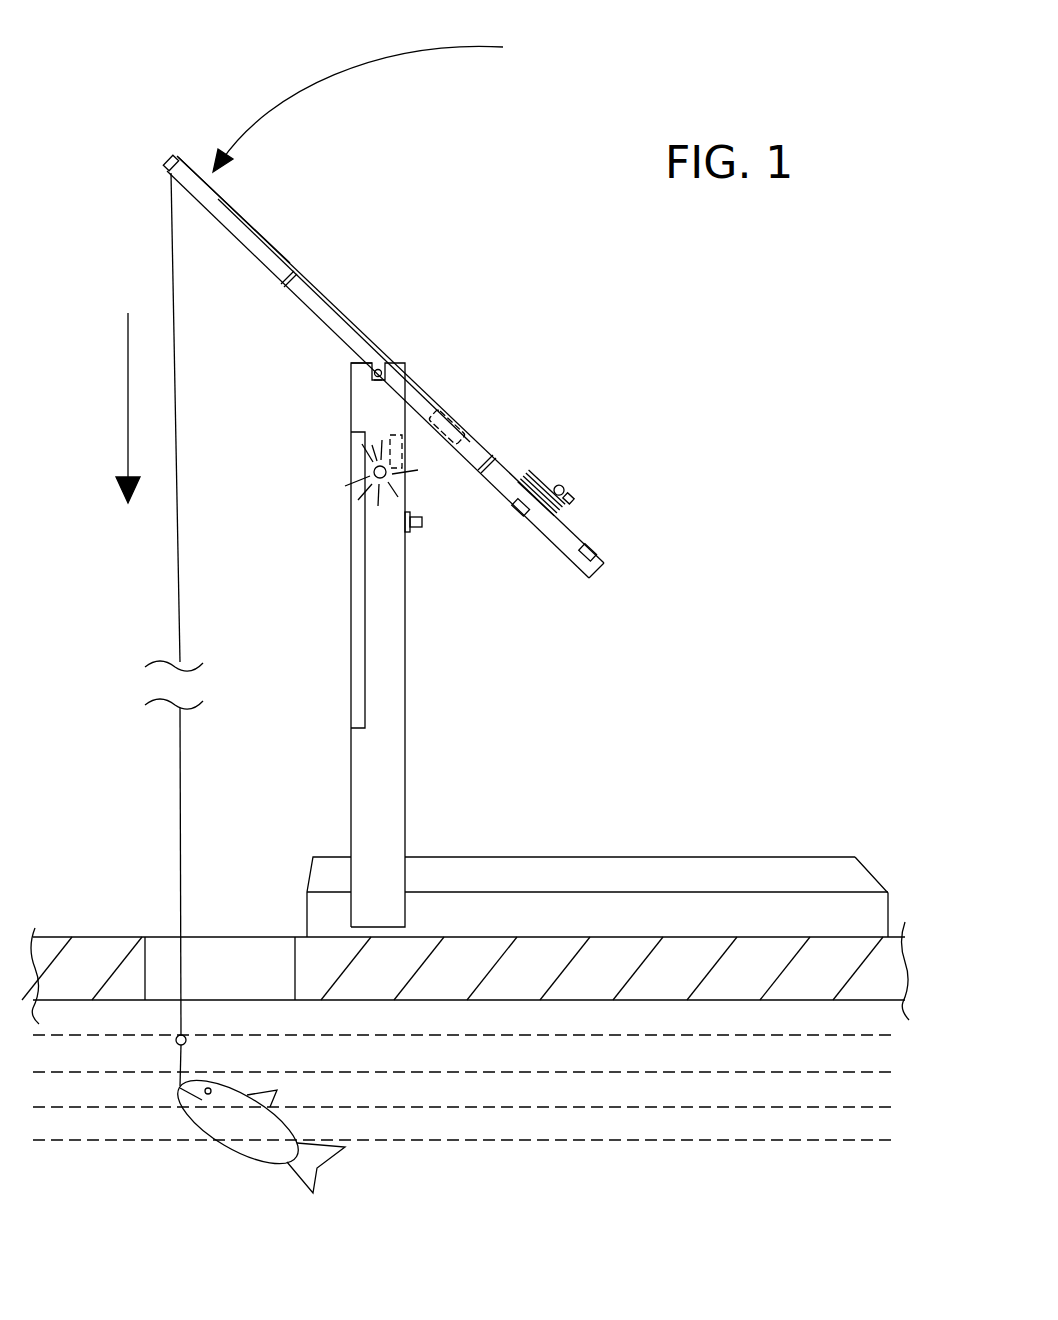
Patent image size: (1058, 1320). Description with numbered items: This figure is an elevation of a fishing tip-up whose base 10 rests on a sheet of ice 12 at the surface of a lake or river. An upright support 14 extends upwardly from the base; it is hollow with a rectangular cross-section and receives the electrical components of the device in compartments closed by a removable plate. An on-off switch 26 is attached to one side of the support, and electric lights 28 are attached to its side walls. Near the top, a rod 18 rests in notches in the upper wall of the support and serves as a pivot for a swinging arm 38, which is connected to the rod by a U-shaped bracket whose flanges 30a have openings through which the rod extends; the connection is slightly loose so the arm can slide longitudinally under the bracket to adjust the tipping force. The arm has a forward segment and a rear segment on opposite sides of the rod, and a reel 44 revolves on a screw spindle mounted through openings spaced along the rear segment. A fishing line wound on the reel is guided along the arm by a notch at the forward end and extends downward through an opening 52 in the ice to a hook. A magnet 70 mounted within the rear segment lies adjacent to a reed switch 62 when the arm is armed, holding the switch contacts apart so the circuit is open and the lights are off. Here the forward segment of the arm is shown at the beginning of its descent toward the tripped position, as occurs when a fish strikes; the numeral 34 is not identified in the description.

The base 10 is at (650, 857).
The sheet of ice 12 is at (82, 937).
The opening in the ice 52 is at (257, 963).
The upright support 14 is at (353, 765).
The rod 18 is at (350, 366).
The flanges 30a is at (378, 363).
The electric lights 28 is at (370, 467).
The reed switch 62 is at (397, 447).
The on-off switch 26 is at (413, 533).
The fishing rod 34 is at (420, 386).
The swinging arm 38 is at (245, 246).
The magnet 70 is at (457, 430).
The reel 44 is at (563, 513).